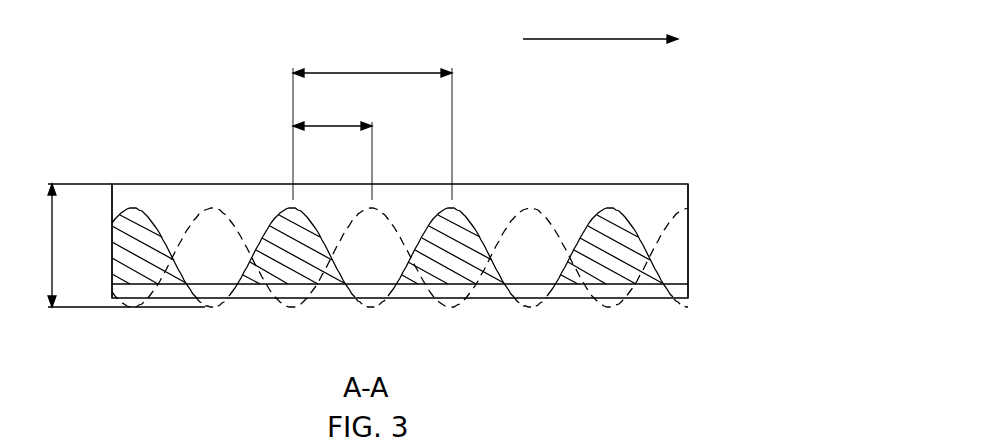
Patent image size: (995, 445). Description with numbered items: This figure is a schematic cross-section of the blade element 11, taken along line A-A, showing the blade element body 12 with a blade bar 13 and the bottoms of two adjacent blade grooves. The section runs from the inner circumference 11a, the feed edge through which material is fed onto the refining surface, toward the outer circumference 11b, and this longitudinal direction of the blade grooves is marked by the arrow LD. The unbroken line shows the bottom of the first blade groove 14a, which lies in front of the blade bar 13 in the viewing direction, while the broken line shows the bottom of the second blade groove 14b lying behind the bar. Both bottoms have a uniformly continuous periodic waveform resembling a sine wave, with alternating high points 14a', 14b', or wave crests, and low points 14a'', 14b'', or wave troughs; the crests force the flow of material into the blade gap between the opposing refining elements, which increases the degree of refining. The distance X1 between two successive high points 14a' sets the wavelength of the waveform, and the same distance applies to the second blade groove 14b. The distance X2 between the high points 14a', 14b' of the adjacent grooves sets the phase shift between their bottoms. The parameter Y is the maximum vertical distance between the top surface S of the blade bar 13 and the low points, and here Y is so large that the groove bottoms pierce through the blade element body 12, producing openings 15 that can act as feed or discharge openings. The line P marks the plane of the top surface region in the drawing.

The blade element 11 is at (667, 108).
The inner circumference 11a is at (93, 282).
The outer circumference 11b is at (719, 261).
The blade element body 12 is at (643, 292).
The blade bar 13 is at (675, 198).
The first blade groove 14a is at (382, 211).
The high point of first blade groove bottom 14a' is at (445, 197).
The low point of first blade groove bottom 14a'' is at (442, 326).
The second blade groove 14b is at (400, 216).
The high point of second blade groove bottom 14b' is at (481, 161).
The low point of second blade groove bottom 14b'' is at (574, 333).
The opening 15 is at (213, 305).
The peak plane P is at (167, 183).
The top surface of blade bar S is at (603, 183).
The maximum depth of groove bottom profile Y is at (116, 245).
The distance between successive high points X1 is at (372, 121).
The distance between high points of adjacent grooves X2 is at (332, 147).
The longitudinal direction of blade grooves LD is at (600, 24).